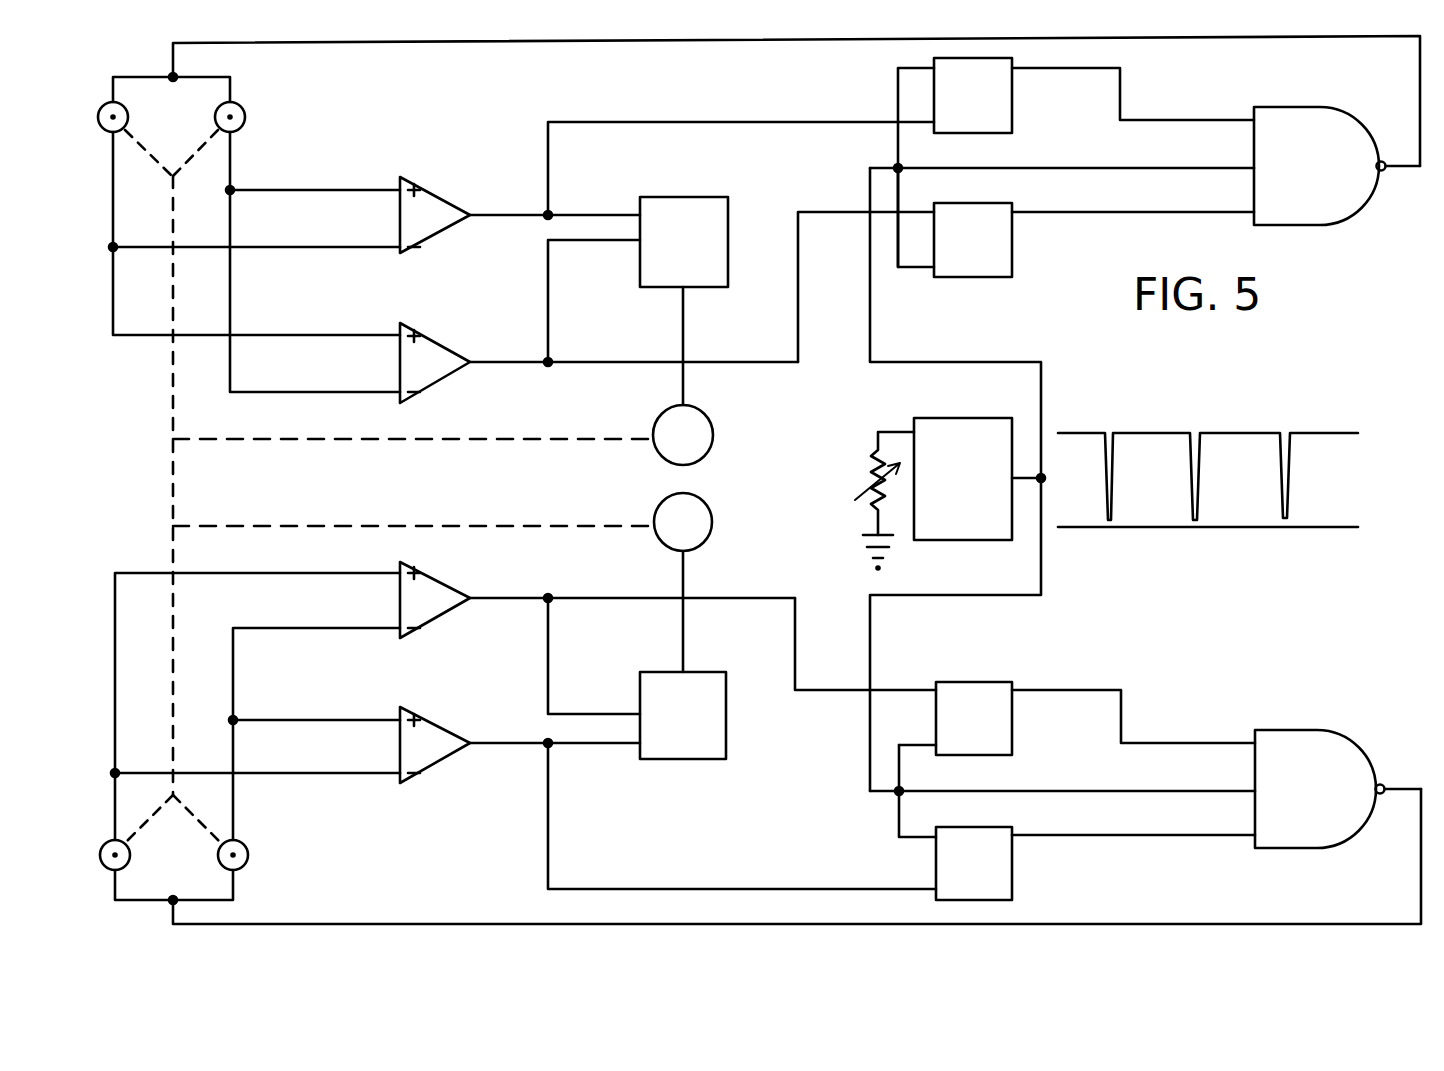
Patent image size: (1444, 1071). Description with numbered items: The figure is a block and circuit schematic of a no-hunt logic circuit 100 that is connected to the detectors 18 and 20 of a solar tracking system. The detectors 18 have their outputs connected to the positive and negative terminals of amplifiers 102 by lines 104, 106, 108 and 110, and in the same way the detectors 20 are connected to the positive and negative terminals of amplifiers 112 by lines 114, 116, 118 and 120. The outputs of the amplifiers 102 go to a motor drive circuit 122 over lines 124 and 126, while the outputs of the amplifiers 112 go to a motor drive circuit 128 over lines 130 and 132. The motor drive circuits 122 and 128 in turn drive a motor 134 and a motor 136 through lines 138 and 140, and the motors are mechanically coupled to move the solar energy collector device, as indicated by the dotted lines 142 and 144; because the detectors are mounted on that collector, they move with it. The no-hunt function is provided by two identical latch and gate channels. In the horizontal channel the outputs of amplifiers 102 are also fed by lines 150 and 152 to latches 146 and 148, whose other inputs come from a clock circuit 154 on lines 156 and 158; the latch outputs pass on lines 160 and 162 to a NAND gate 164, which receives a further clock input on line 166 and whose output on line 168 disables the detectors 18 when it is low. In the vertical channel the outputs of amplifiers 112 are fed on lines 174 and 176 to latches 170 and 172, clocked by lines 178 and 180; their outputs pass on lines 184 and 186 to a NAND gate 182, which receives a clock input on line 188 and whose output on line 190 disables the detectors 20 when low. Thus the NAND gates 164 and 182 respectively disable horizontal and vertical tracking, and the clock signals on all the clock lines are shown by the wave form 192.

The detectors 18 is at (98, 852).
The detectors 20 is at (98, 128).
The no-hunt logic circuit 100 is at (1296, 346).
The amplifiers 102 is at (440, 573).
The line 104 is at (320, 720).
The line 106 is at (325, 628).
The line 108 is at (274, 573).
The line 110 is at (316, 773).
The amplifiers 112 is at (437, 190).
The line 114 is at (306, 190).
The line 116 is at (300, 392).
The line 118 is at (297, 247).
The line 120 is at (290, 335).
The motor drive circuit 122 is at (726, 662).
The line 124 is at (548, 668).
The line 126 is at (572, 750).
The motor drive circuit 128 is at (728, 212).
The line 130 is at (583, 213).
The line 132 is at (552, 322).
The motor 134 is at (708, 512).
The motor 136 is at (713, 428).
The line 138 is at (683, 652).
The line 140 is at (683, 335).
The dotted line 142 is at (508, 437).
The dotted line 144 is at (508, 524).
The latch 146 is at (1012, 738).
The latch 148 is at (1012, 878).
The line 150 is at (735, 598).
The line 152 is at (708, 889).
The clock circuit 154 is at (973, 540).
The line 156 is at (908, 745).
The line 158 is at (905, 837).
The line 160 is at (1183, 743).
The line 162 is at (1160, 835).
The NAND gate 164 is at (1345, 730).
The line 166 is at (1180, 790).
The line 168 is at (1421, 872).
The latch 170 is at (1012, 128).
The latch 172 is at (1012, 245).
The line 174 is at (773, 122).
The line 176 is at (800, 298).
The line 178 is at (898, 90).
The line 180 is at (910, 267).
The NAND gate 182 is at (1335, 107).
The line 184 is at (1205, 120).
The line 186 is at (1193, 212).
The line 188 is at (1208, 166).
The line 190 is at (1208, 40).
The wave form 192 is at (1152, 433).